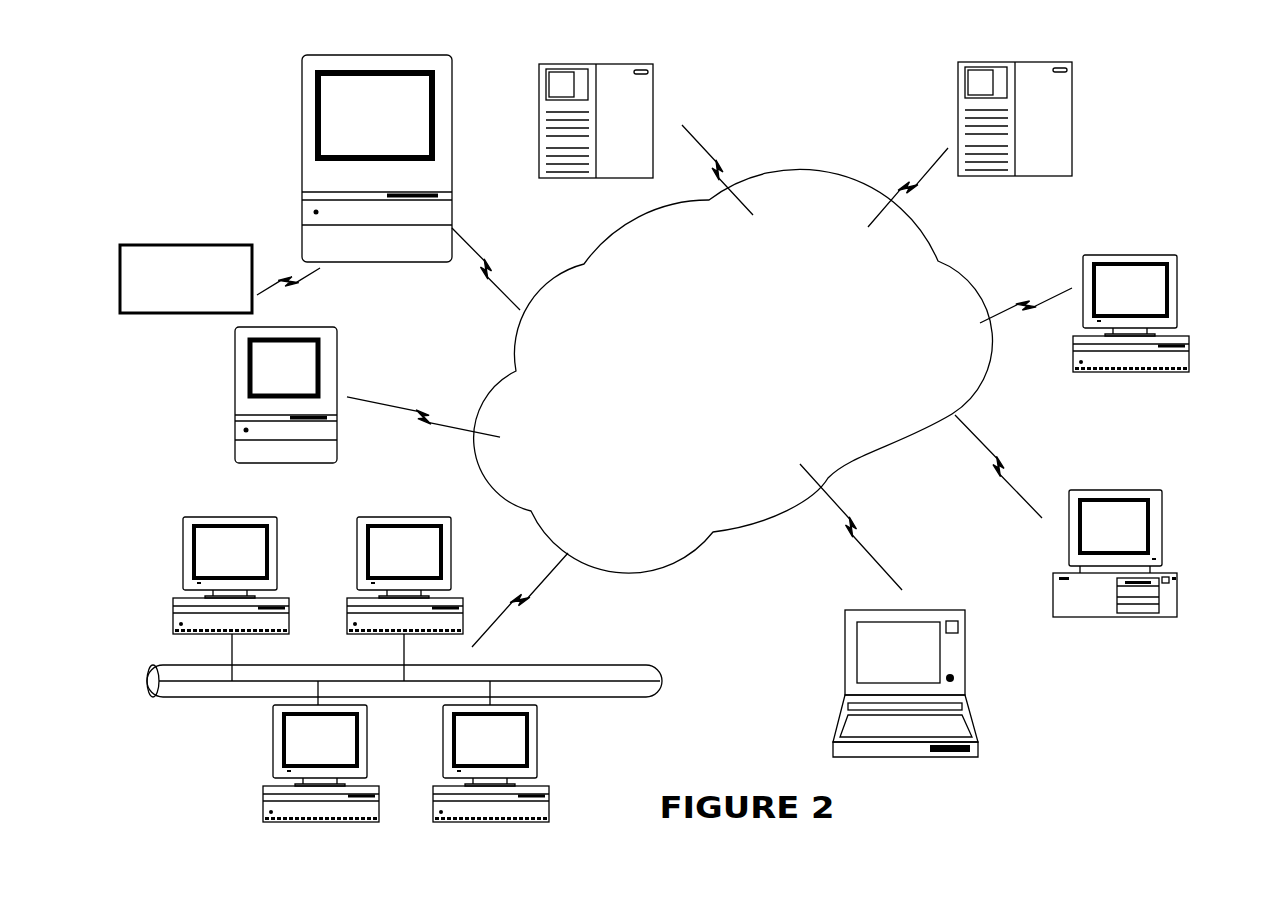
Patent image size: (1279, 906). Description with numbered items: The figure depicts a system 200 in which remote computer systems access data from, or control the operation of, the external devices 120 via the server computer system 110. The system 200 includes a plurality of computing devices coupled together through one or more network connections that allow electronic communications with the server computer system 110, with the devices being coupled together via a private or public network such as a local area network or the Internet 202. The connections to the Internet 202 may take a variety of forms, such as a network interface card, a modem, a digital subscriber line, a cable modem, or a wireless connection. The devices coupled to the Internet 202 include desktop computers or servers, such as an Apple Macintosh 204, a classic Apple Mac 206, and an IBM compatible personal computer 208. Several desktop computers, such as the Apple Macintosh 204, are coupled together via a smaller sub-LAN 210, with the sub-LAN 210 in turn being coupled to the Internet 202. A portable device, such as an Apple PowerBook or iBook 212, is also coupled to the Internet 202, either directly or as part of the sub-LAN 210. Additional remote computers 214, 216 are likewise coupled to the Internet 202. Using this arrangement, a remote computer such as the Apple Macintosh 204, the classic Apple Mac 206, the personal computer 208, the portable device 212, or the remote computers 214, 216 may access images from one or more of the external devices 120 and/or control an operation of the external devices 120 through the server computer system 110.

The system 200 is at (183, 93).
The server computer system 110 is at (302, 184).
The external devices 120 is at (228, 245).
The Internet 202 is at (705, 387).
The Apple Macintosh 204 is at (183, 555).
The classic Apple Mac 206 is at (232, 413).
The IBM compatible personal computer 208 is at (1162, 533).
The sub-LAN 210 is at (553, 656).
The Apple PowerBook or iBook 212 is at (845, 670).
The remote computer 214 is at (653, 119).
The remote computer 216 is at (1070, 120).